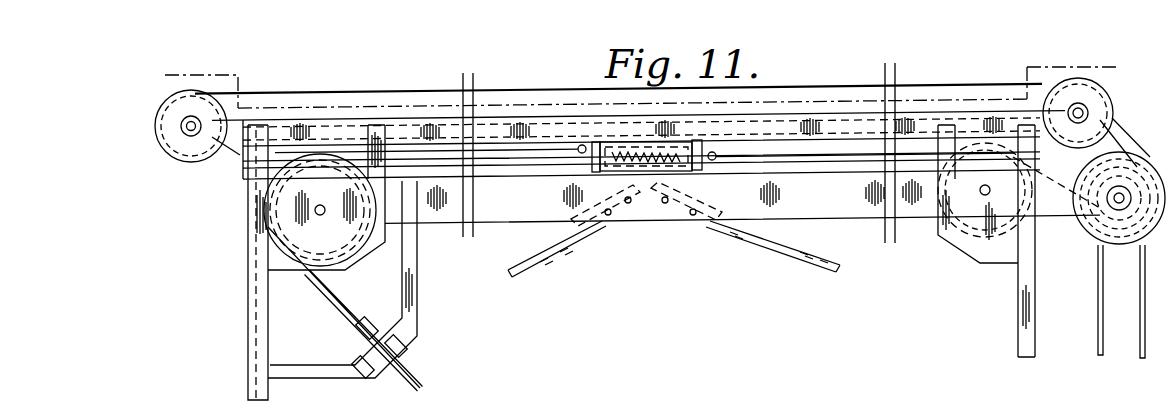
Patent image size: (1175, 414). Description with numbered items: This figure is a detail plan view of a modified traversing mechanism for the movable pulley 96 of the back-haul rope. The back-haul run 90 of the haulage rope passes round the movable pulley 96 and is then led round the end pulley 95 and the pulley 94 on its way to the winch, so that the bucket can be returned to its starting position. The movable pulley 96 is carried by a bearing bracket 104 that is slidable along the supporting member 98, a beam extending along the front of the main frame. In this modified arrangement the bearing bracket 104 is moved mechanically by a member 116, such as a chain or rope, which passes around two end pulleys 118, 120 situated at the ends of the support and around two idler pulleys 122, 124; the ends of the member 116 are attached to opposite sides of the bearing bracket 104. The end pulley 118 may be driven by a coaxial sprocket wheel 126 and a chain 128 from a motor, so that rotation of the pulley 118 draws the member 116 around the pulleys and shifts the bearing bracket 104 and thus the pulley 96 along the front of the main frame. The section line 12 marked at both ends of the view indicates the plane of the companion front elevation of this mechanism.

The section line 12- 12 is at (1118, 80).
The back-haul run 90 is at (710, 168).
The pulley 94 is at (398, 380).
The pulley 95 is at (268, 232).
The movable pulley 96 is at (650, 165).
The supporting member 98 is at (488, 222).
The bearing bracket 104 is at (593, 142).
The member 116 is at (778, 155).
The end pulley 118 is at (1102, 236).
The end pulley 120 is at (173, 160).
The idler pulley 122 is at (1110, 108).
The idler pulley 124 is at (972, 236).
The sprocket wheel 126 is at (1110, 262).
The chain 128 is at (1098, 312).